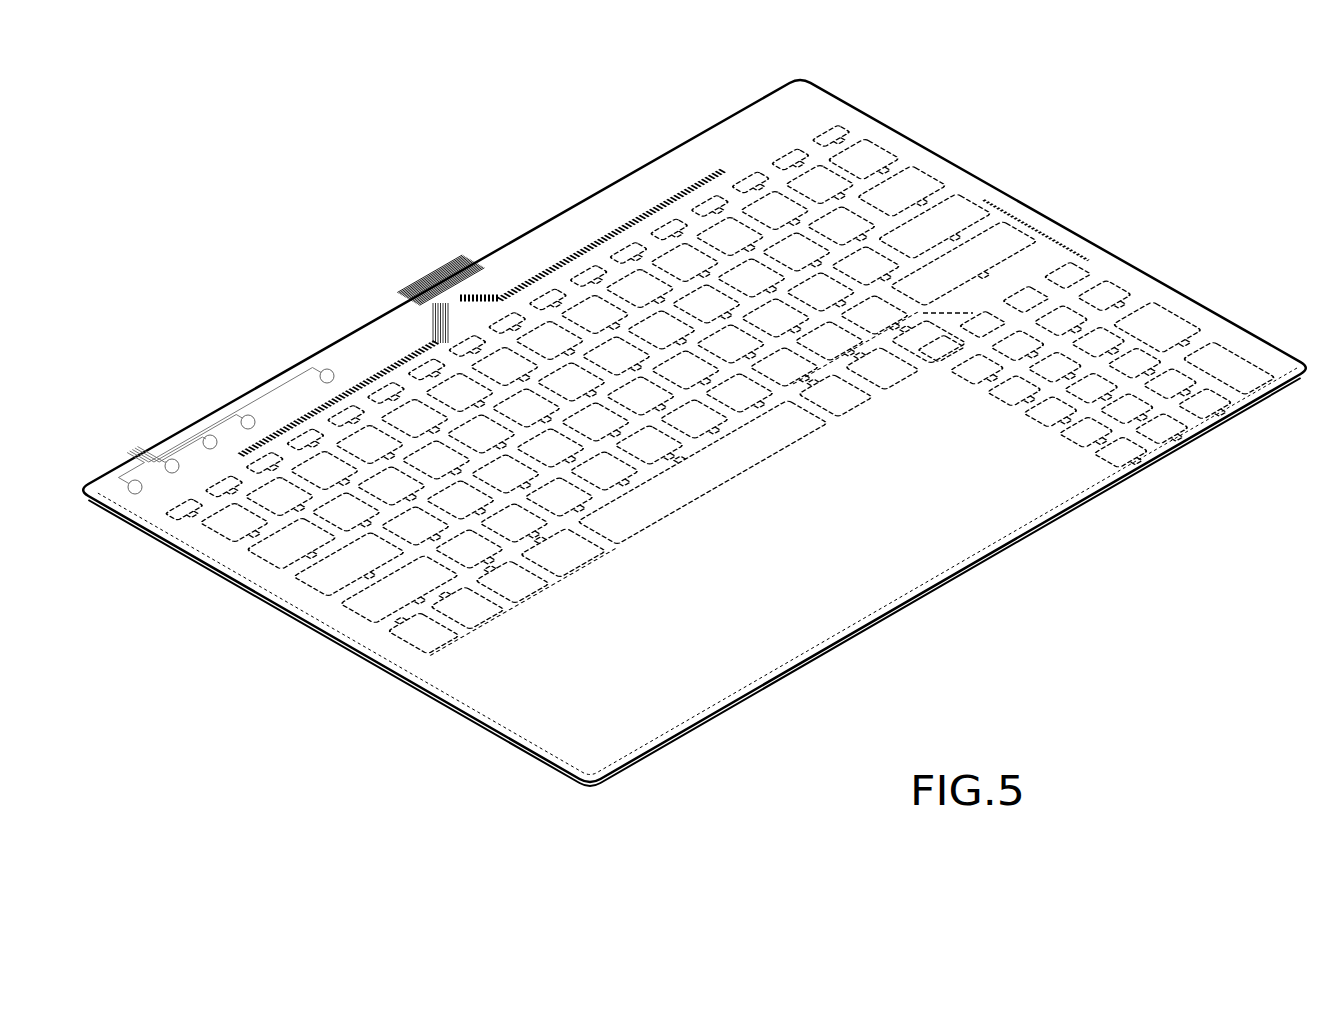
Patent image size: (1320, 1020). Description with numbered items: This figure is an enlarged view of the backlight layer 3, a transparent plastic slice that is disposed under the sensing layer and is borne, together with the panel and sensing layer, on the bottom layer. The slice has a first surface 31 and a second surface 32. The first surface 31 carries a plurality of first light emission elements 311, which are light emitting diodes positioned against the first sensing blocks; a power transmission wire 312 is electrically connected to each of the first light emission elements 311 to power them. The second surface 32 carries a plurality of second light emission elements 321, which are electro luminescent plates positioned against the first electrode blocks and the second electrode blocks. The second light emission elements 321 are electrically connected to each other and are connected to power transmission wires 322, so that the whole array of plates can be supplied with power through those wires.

The backlight layer 3 is at (334, 151).
The first surface 31 is at (1240, 328).
The second surface 32 is at (1252, 410).
The second light emission elements 321 is at (347, 600).
The power transmission wires 322 is at (700, 182).
The first light emission elements 311 is at (249, 415).
The power transmission wire 312 is at (213, 415).